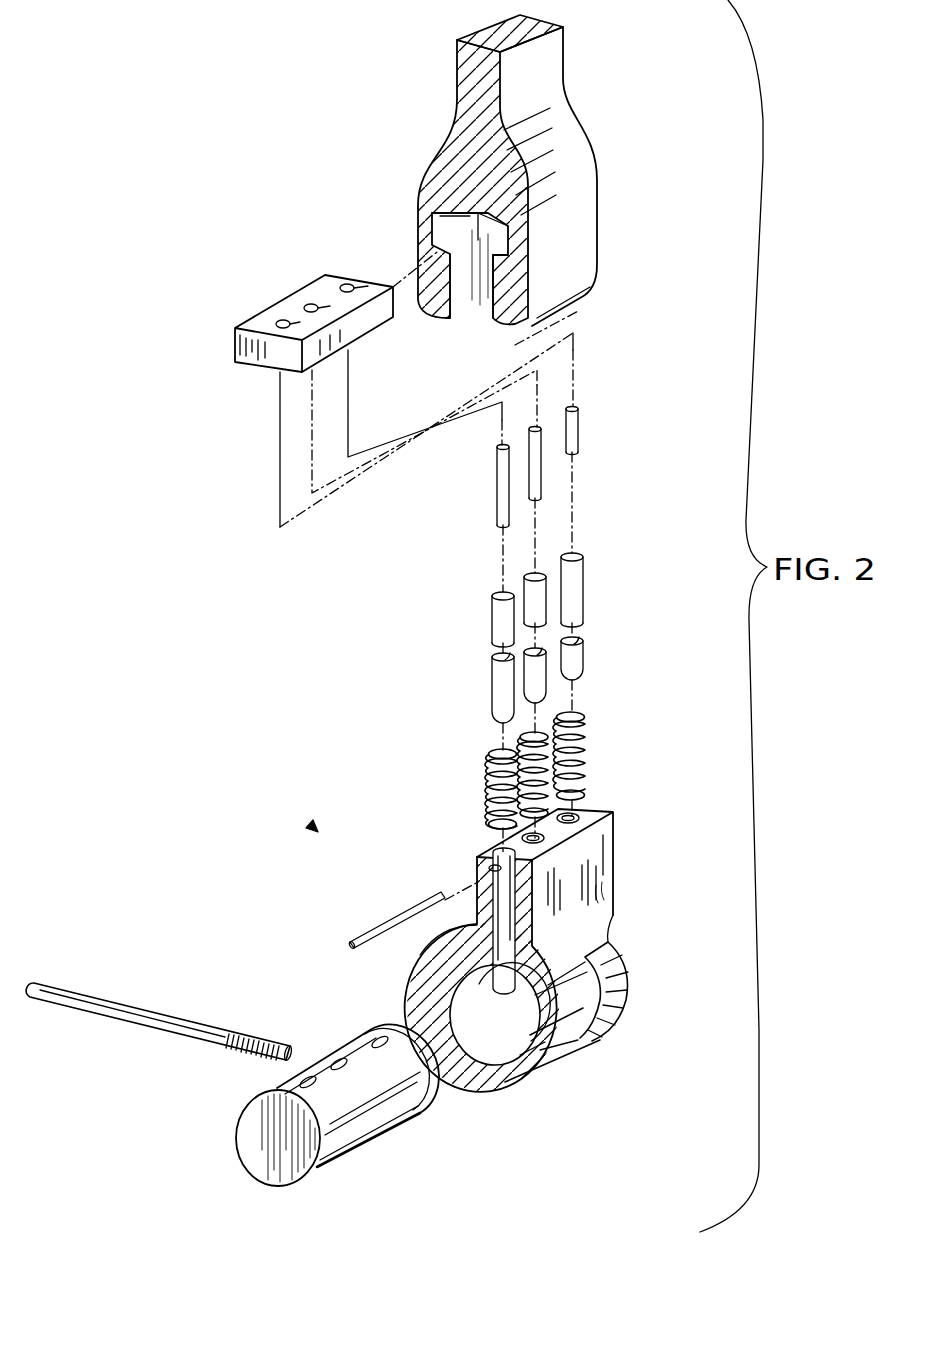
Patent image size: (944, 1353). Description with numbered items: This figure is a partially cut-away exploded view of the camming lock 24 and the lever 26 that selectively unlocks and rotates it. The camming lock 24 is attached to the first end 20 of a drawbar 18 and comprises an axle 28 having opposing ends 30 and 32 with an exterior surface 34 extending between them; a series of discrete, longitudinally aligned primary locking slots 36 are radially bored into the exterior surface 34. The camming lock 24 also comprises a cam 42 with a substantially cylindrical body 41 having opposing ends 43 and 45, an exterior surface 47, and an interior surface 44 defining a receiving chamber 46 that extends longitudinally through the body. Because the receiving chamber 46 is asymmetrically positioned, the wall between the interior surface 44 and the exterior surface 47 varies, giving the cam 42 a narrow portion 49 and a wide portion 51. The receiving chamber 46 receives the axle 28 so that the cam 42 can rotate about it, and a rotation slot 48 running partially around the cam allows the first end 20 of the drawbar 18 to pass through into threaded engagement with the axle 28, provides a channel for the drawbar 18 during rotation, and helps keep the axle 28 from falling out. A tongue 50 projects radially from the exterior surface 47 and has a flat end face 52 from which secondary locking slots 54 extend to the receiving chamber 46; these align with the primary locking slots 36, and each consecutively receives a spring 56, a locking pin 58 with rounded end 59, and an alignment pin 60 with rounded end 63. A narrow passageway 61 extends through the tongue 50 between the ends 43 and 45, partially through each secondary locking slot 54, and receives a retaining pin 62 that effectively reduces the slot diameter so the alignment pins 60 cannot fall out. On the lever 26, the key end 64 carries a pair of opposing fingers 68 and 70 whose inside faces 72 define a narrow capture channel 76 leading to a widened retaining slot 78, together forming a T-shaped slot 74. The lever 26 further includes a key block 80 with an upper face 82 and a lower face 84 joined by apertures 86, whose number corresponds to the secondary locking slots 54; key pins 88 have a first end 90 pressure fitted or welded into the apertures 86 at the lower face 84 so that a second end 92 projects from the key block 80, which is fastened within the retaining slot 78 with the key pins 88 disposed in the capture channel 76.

The drawbar 18 is at (135, 1022).
The first end of drawbar 20 is at (245, 1037).
The camming lock 24 is at (318, 832).
The lever 26 is at (545, 62).
The axle 28 is at (352, 1132).
The end of axle 30 is at (430, 1092).
The end of axle 32 is at (265, 1160).
The exterior surface of axle 34 is at (400, 1100).
The primary locking slots 36 is at (270, 1077).
The body of cam 41 is at (615, 905).
The cam 42 is at (688, 832).
The end of cam body 43 is at (632, 948).
The interior surface of cam body 44 is at (512, 1055).
The end of cam body 45 is at (418, 990).
The receiving chamber 46 is at (472, 1055).
The exterior surface of cam body 47 is at (577, 1063).
The rotation slot 48 is at (602, 1022).
The narrow portion of cam 49 is at (547, 1062).
The tongue 50 is at (605, 848).
The wide portion of cam 51 is at (442, 945).
The end face of tongue 52 is at (595, 812).
The secondary locking slots 54 is at (575, 790).
The spring 56 is at (492, 800).
The locking pin 58 is at (495, 688).
The end of locking pin 59 is at (495, 663).
The alignment pin 60 is at (495, 615).
The passageway 61 is at (492, 858).
The retaining pin 62 is at (410, 897).
The end of alignment pin 63 is at (497, 652).
The key end 64 is at (578, 208).
The finger 68 is at (437, 320).
The finger 70 is at (540, 333).
The inside face 72 is at (500, 318).
The T-shaped slot 74 is at (505, 241).
The capture channel 76 is at (447, 257).
The retaining slot 78 is at (440, 216).
The key block 80 is at (252, 345).
The upper face of key block 82 is at (302, 318).
The lower face of key block 84 is at (290, 385).
The apertures 86 is at (308, 305).
The key pins 88 is at (500, 490).
The first end of key pin 90 is at (498, 449).
The second end of key pin 92 is at (500, 525).